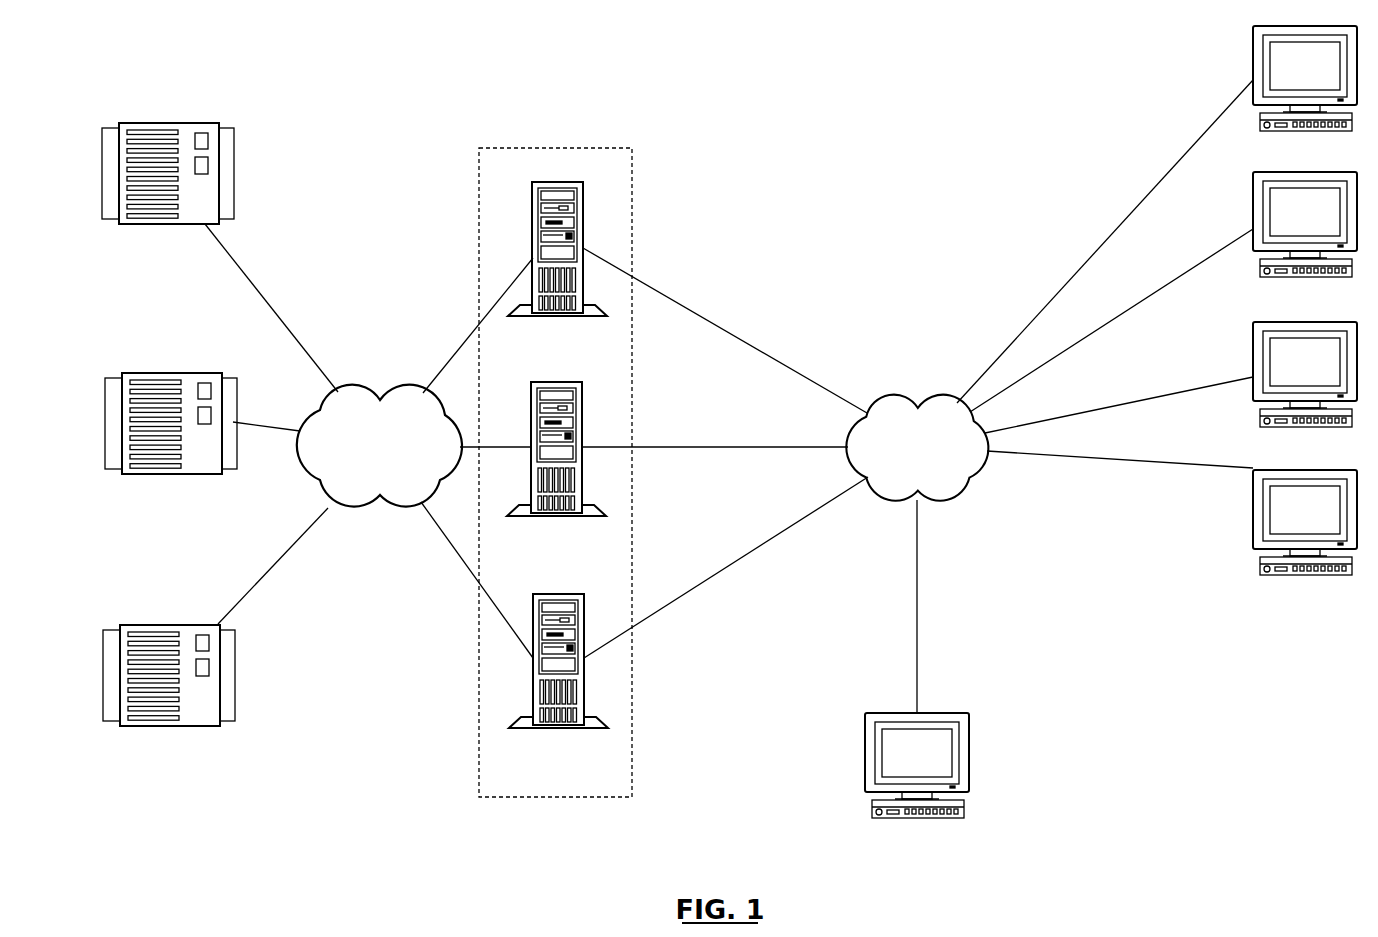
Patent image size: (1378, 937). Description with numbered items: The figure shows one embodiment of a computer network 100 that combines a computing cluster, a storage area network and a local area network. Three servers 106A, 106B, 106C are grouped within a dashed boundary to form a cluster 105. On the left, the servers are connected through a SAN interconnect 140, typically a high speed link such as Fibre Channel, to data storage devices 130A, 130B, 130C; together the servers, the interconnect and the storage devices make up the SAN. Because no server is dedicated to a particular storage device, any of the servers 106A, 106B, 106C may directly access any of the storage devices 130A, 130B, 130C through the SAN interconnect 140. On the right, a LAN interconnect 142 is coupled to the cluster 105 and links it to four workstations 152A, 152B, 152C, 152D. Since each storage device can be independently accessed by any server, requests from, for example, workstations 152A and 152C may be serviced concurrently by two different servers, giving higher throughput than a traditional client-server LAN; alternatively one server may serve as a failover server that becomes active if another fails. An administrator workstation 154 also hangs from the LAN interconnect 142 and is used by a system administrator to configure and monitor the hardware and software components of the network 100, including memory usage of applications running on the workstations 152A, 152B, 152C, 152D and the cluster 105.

The computer network 100 is at (762, 126).
The cluster 105 is at (479, 752).
The server 106A is at (557, 266).
The server 106B is at (556, 466).
The server 106C is at (558, 678).
The data storage device 130A is at (168, 192).
The data storage device 130B is at (171, 440).
The data storage device 130C is at (169, 694).
The SAN interconnect 140 is at (360, 476).
The LAN interconnect 142 is at (899, 474).
The workstation 152A is at (1305, 95).
The workstation 152B is at (1305, 243).
The workstation 152C is at (1305, 391).
The workstation 152D is at (1305, 539).
The administrator workstation 154 is at (917, 783).